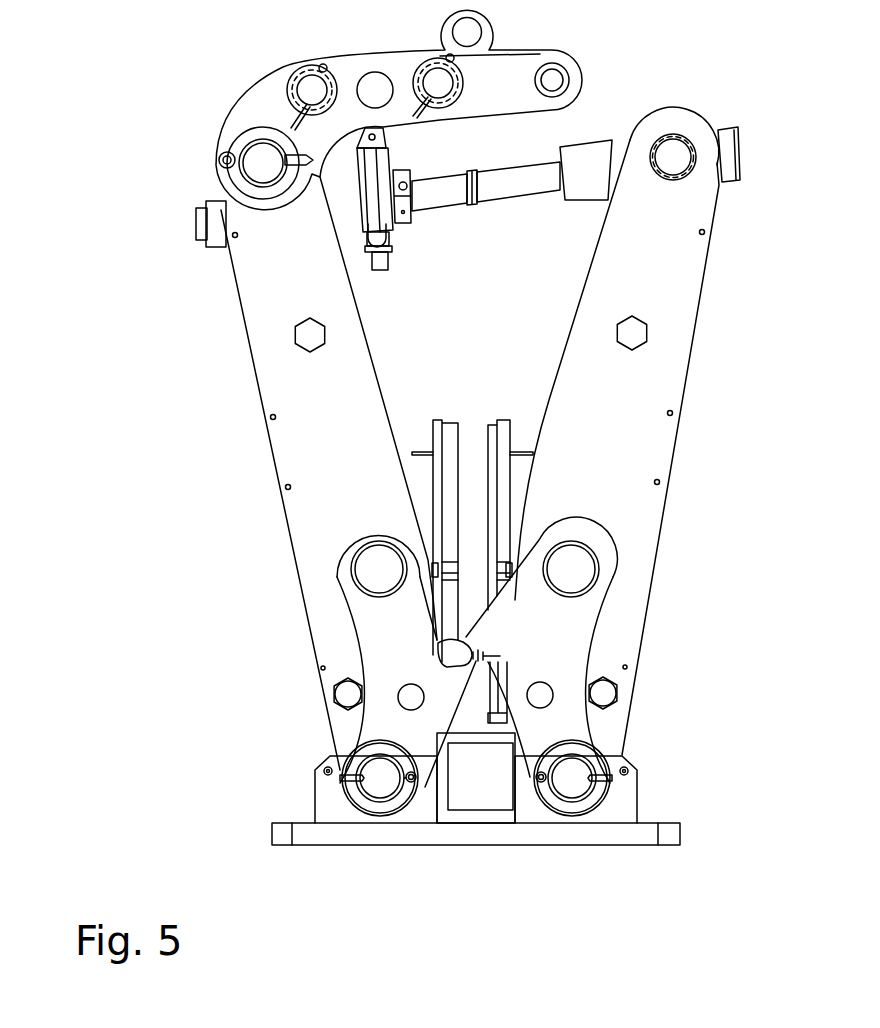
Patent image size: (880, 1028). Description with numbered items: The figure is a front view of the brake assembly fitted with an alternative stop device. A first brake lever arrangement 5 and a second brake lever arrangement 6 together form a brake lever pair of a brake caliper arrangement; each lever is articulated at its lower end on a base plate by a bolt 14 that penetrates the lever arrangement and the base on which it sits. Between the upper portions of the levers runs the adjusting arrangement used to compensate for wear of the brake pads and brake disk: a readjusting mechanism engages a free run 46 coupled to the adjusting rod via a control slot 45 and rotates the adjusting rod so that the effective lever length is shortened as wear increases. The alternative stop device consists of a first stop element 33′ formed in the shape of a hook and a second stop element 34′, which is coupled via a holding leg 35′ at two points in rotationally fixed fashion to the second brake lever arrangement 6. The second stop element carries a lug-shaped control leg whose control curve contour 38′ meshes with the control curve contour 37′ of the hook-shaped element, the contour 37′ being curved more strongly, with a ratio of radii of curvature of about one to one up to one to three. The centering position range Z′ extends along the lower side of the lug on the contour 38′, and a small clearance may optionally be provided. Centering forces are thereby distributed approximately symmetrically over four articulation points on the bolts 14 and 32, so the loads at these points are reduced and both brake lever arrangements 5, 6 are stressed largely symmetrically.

The first brake lever arrangement 5 is at (261, 446).
The second brake lever arrangement 6 is at (688, 419).
The bolt 14 is at (370, 772).
The bolt 32 is at (372, 569).
The first stop element 33′ is at (372, 625).
The second stop element 34′ is at (573, 613).
The holding leg 35′ is at (571, 668).
The control curve contour 37′ is at (470, 668).
The control curve contour 38′ is at (483, 655).
The control slot 45 is at (375, 205).
The free run 46 is at (368, 240).
The centering position range Z′ is at (466, 653).